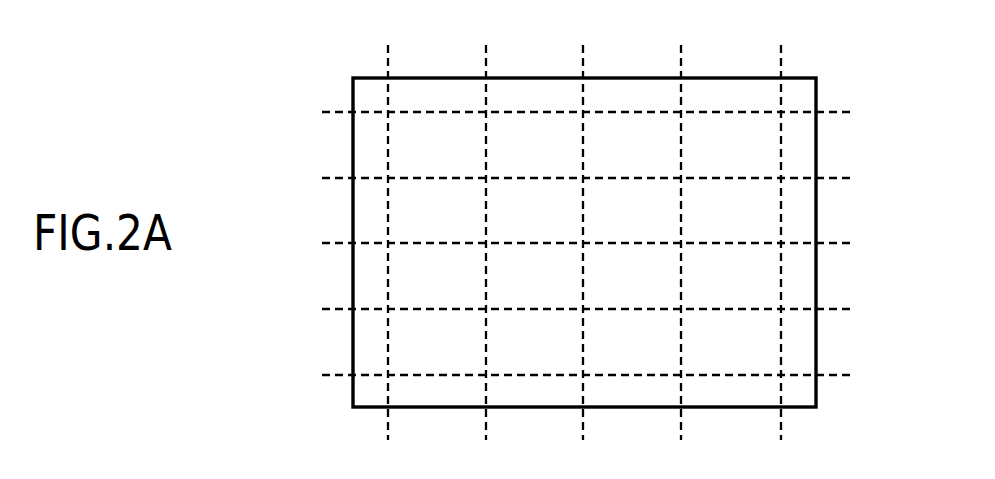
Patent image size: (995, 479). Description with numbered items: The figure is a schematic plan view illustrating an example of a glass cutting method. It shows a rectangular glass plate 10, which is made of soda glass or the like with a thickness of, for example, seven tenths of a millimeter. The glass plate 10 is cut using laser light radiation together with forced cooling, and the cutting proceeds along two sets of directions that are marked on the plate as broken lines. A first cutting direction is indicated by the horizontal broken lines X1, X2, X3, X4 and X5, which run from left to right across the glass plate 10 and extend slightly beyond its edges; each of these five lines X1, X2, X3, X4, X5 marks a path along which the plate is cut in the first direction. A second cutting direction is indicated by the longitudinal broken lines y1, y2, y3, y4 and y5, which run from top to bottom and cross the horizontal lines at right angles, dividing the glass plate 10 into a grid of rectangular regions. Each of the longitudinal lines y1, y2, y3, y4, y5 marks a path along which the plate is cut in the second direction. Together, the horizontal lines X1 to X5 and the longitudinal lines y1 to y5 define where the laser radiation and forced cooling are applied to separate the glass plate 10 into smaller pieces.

The glass plate 10 is at (804, 77).
The horizontal broken line X1 is at (831, 112).
The horizontal broken line X2 is at (831, 178).
The horizontal broken line X3 is at (831, 243).
The horizontal broken line X4 is at (831, 309).
The horizontal broken line X5 is at (831, 375).
The longitudinal broken line y1 is at (388, 424).
The longitudinal broken line y2 is at (486, 424).
The longitudinal broken line y3 is at (583, 424).
The longitudinal broken line y4 is at (681, 424).
The longitudinal broken line y5 is at (781, 424).